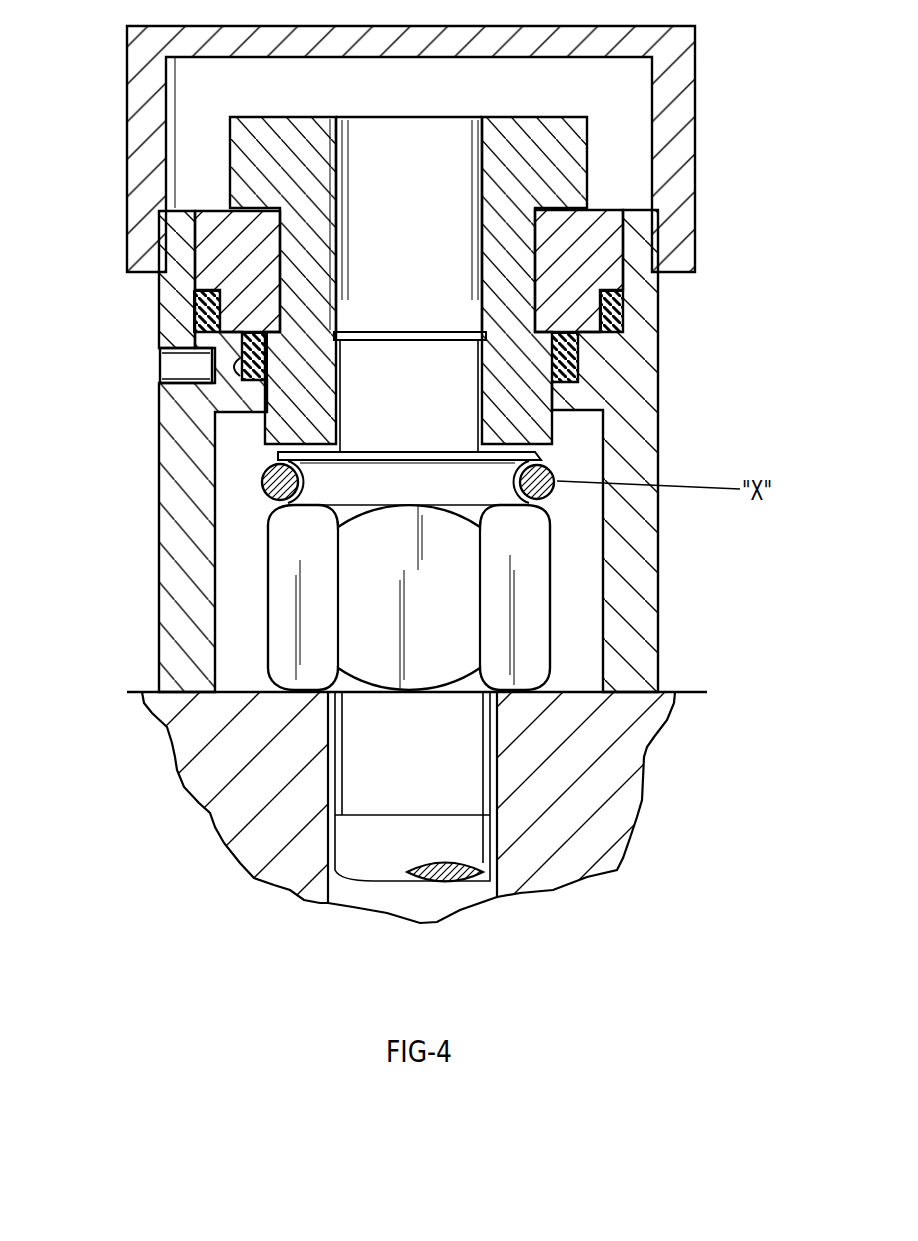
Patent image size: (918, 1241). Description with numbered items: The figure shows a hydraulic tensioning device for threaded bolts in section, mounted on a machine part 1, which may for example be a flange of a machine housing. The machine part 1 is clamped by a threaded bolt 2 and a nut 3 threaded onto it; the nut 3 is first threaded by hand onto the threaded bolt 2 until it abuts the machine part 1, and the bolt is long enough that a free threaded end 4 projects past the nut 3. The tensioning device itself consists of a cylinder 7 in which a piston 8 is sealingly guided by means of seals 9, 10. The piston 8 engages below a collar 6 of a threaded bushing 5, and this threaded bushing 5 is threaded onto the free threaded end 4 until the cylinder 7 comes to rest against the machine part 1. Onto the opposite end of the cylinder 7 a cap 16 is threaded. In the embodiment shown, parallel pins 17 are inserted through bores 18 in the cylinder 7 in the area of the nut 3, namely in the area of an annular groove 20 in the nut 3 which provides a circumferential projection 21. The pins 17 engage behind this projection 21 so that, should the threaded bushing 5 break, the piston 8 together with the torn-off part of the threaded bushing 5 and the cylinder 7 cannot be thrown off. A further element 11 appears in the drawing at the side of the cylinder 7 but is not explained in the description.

The machine part 1 is at (613, 762).
The threaded bolt 2 is at (460, 840).
The nut 3 is at (527, 615).
The free threaded end 4 is at (462, 390).
The threaded bushing 5 is at (515, 265).
The collar 6 is at (578, 165).
The cylinder 7 is at (175, 556).
The piston 8 is at (238, 325).
The seal 9 is at (200, 298).
The seal 10 is at (247, 367).
The set screw 11 is at (187, 366).
The cap 16 is at (675, 68).
The parallel pins 17 is at (550, 493).
The bores 18 is at (550, 461).
The annular groove 20 is at (507, 492).
The circumferential projection 21 is at (537, 452).